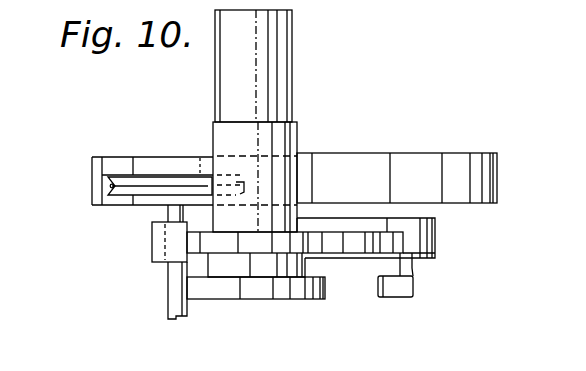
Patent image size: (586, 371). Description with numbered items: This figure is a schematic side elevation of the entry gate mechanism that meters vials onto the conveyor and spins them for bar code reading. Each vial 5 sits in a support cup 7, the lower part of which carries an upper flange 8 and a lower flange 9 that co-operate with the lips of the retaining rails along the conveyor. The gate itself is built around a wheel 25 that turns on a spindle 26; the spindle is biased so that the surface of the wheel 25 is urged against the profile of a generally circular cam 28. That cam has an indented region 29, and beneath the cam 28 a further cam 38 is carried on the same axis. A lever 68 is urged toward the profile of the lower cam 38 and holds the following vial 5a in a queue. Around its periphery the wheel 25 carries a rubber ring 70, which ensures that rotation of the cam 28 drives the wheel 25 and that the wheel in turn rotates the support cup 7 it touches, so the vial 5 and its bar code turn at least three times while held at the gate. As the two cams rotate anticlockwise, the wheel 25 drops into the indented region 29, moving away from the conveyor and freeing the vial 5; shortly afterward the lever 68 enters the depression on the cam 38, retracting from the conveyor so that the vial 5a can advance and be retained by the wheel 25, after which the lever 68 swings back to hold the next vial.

The vial 5 is at (282, 70).
The vial 5a is at (405, 286).
The support cup 7 is at (289, 137).
The upper flange 8 is at (308, 237).
The lower flange 9 is at (320, 290).
The wheel 25 is at (127, 195).
The spindle 26 is at (173, 285).
The cam 28 is at (177, 157).
The indented region 29 is at (103, 163).
The cam 38 is at (425, 242).
The lever 68 is at (350, 237).
The rubber ring 70 is at (110, 186).